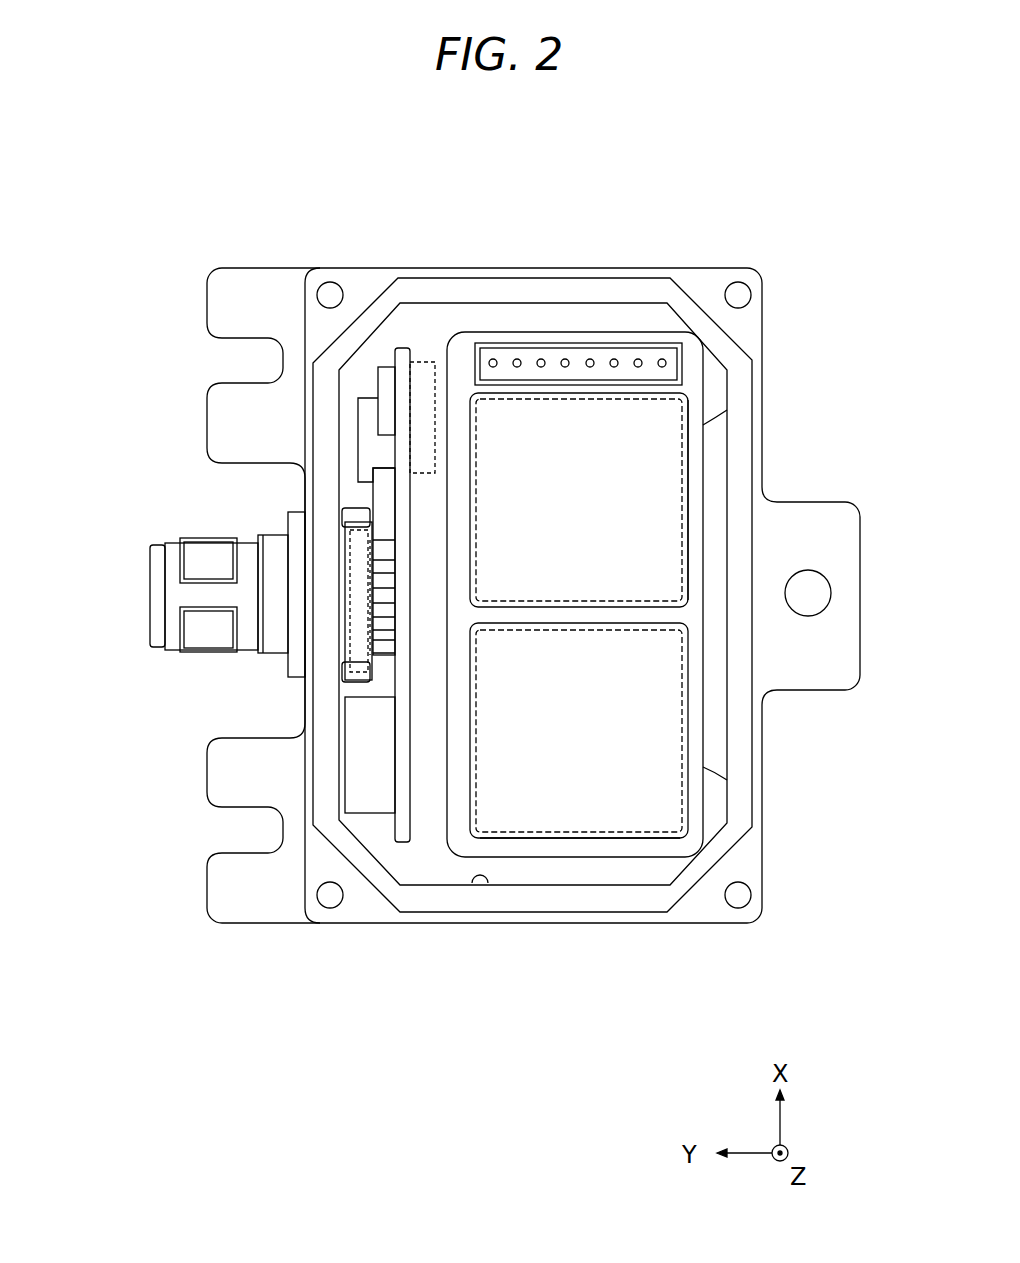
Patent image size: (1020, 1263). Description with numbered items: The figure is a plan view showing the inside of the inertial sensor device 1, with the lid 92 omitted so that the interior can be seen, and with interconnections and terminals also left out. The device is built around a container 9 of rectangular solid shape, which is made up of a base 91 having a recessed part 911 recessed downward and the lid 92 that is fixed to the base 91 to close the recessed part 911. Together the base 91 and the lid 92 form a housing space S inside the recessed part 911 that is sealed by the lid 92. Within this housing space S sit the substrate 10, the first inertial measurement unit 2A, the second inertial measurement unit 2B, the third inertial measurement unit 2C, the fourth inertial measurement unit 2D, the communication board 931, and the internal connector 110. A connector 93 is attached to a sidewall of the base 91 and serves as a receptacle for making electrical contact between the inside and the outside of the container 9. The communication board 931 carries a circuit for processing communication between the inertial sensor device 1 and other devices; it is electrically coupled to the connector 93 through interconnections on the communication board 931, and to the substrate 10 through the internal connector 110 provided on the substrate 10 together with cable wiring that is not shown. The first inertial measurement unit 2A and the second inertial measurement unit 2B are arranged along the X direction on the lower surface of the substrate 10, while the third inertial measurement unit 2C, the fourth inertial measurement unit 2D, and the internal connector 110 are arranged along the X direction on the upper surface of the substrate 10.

The inertial sensor device 1 is at (498, 573).
The container 9 is at (557, 595).
The base 91 is at (740, 865).
The lid 92 is at (740, 783).
The housing space S is at (653, 870).
The substrate 10 is at (578, 285).
The internal connector 110 is at (522, 345).
The first inertial measurement unit 2A is at (655, 437).
The second inertial measurement unit 2B is at (600, 817).
The third inertial measurement unit 2C is at (688, 497).
The fourth inertial measurement unit 2D is at (528, 838).
The connector 93 is at (150, 590).
The communication board 931 is at (404, 823).
The recessed part 911 is at (473, 888).